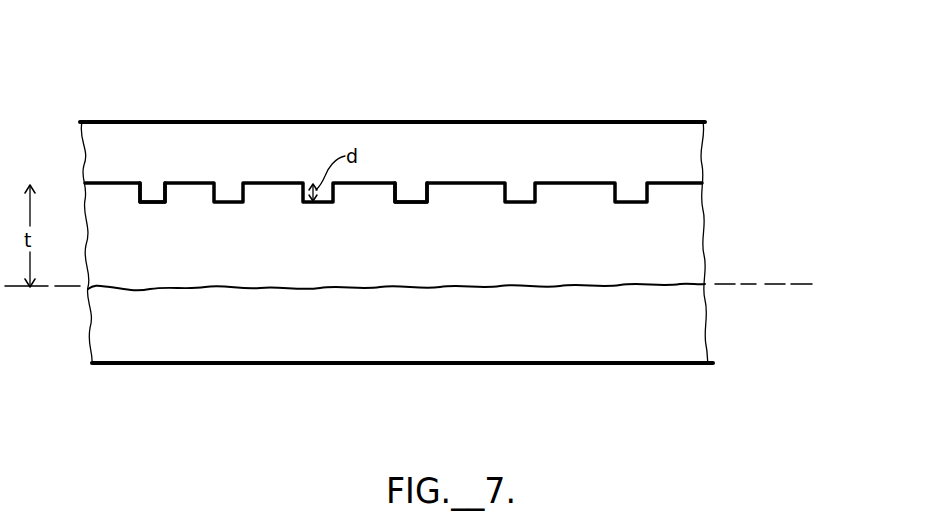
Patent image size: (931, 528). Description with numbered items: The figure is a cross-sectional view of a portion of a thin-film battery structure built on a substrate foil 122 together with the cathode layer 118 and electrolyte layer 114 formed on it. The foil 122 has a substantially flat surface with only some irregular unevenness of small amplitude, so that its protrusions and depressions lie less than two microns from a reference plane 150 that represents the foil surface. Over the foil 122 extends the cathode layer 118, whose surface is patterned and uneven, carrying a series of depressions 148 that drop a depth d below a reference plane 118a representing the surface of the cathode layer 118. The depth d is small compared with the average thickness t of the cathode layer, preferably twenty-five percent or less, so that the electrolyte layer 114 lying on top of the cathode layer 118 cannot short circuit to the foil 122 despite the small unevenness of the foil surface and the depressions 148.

The electrolyte layer 114 is at (678, 152).
The cathode layer 118 is at (683, 240).
The reference plane representing the surface of the cathode layer 118a is at (188, 182).
The depressions 148 is at (411, 190).
The reference plane representing the surface of the foil 150 is at (773, 286).
The substrate foil 122 is at (660, 350).